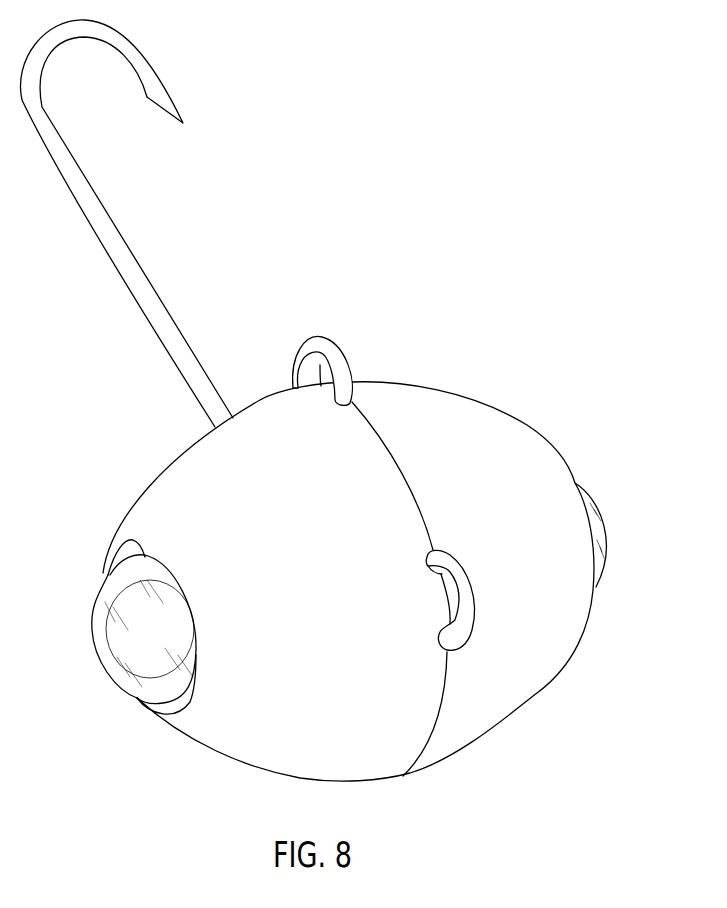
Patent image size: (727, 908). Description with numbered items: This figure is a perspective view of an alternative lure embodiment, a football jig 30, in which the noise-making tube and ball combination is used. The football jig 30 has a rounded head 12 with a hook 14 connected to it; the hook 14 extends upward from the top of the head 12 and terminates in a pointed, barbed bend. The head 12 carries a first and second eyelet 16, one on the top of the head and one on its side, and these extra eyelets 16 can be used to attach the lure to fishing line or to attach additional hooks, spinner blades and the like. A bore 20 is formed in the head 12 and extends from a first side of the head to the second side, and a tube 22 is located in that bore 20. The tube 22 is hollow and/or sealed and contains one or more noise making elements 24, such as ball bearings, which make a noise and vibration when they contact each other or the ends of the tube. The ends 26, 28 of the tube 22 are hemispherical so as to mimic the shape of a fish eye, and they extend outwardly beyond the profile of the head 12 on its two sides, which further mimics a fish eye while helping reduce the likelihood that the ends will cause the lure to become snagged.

The head 12 is at (527, 425).
The hook 14 is at (173, 100).
The eyelet 16 is at (351, 363).
The bore 20 is at (142, 557).
The tube 22 is at (123, 580).
The noise making element 24 is at (133, 667).
The end of tube 26 is at (598, 533).
The end of tube 28 is at (107, 650).
The football jig 30 is at (570, 283).